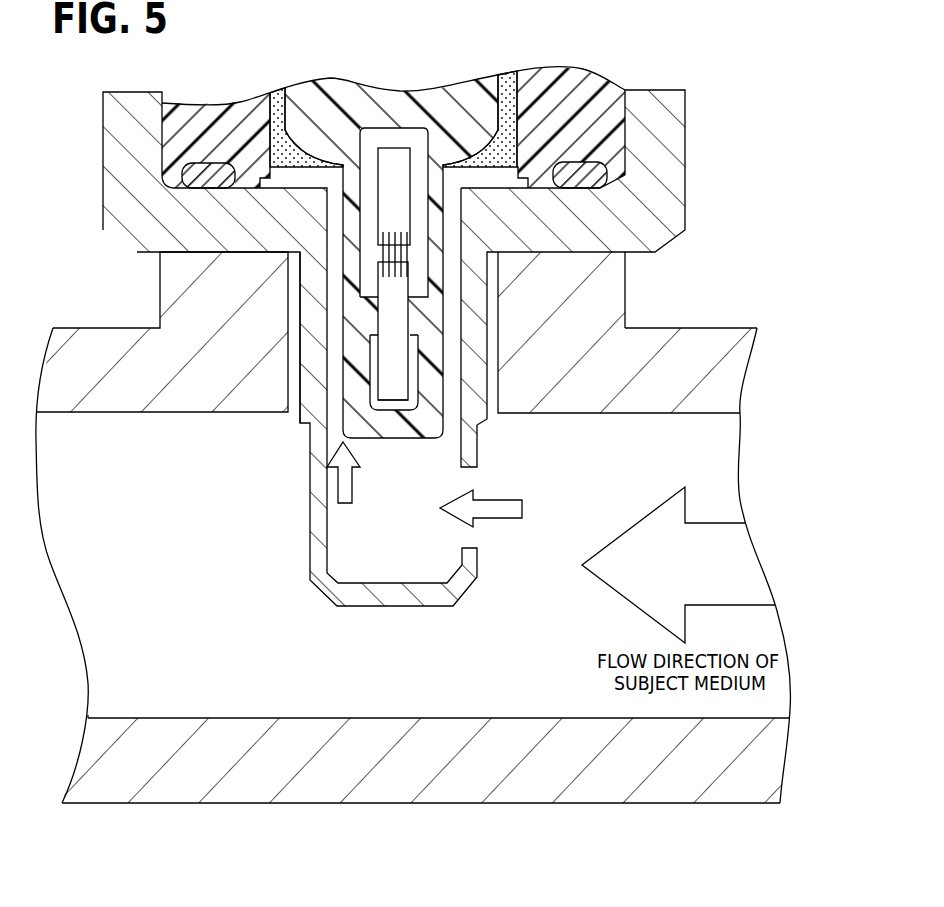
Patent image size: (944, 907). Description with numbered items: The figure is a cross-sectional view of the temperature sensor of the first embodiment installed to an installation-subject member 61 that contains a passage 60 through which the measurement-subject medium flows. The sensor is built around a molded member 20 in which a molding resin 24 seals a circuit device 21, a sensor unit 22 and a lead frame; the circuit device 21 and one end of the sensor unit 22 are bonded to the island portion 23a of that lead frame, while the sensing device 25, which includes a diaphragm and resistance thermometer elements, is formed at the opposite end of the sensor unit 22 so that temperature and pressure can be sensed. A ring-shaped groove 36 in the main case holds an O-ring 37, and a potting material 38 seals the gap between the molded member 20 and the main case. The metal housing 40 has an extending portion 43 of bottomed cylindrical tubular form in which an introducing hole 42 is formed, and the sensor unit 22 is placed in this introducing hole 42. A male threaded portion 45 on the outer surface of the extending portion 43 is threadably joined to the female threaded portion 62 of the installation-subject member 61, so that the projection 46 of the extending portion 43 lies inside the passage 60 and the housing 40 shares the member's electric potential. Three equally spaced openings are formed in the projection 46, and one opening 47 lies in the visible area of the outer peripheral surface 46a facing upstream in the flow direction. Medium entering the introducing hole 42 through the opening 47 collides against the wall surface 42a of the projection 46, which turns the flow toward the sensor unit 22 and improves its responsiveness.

The molded member 20 is at (463, 131).
The circuit device 21 is at (398, 193).
The sensor unit 22 is at (398, 370).
The island portion 23a is at (368, 228).
The molding resin 24 is at (312, 432).
The sensing device 25 is at (397, 383).
The groove 36 is at (166, 178).
The O-ring 37 is at (192, 190).
The potting material 38 is at (514, 140).
The housing 40 is at (667, 156).
The introducing hole 42 is at (385, 538).
The wall surface 42a is at (360, 555).
The extending portion 43 is at (328, 432).
The threaded portion 45 is at (300, 322).
The projection 46 is at (317, 550).
The outer peripheral surface 46a is at (480, 563).
The opening 47 is at (463, 468).
The passage 60 is at (200, 675).
The installation-subject member 61 is at (722, 388).
The threaded portion 62 is at (556, 285).